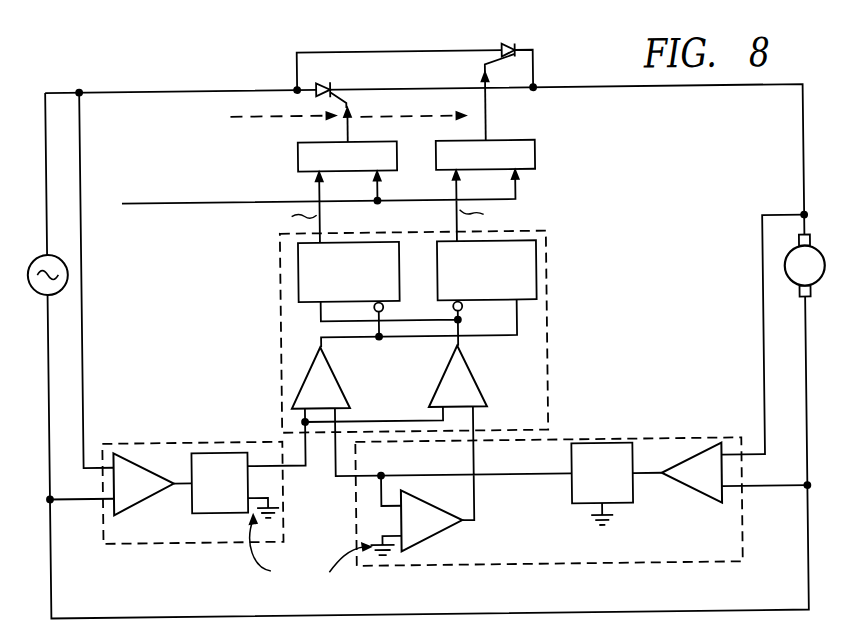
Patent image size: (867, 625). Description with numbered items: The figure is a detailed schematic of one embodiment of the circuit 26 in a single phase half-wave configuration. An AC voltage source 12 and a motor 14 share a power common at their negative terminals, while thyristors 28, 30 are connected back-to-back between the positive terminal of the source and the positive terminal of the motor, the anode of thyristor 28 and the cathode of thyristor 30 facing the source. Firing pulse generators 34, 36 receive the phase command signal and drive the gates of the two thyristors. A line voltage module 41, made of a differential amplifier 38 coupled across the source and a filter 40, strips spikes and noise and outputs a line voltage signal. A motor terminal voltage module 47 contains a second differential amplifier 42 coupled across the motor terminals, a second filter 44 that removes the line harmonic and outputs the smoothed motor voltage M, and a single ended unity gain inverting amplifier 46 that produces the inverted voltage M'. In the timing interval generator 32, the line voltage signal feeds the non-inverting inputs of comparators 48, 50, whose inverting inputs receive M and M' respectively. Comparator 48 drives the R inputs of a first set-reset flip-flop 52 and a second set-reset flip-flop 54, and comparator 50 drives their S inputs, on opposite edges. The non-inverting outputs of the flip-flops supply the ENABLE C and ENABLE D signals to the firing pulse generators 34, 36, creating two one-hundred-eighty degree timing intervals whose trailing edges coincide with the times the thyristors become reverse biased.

The circuit 26 is at (110, 70).
The AC voltage source 12 is at (69, 271).
The motor 14 is at (781, 270).
The thyristor 28 is at (336, 87).
The thyristor 30 is at (521, 48).
The firing pulse generator 34 is at (338, 166).
The firing pulse generator 36 is at (476, 166).
The timing interval generator 32 is at (505, 372).
The first set-reset flip-flop 52 is at (337, 282).
The second set-reset flip-flop 54 is at (475, 282).
The comparator 48 is at (308, 390).
The comparator 50 is at (445, 390).
The line voltage module 41 is at (146, 532).
The differential amplifier 38 is at (128, 490).
The filter 40 is at (206, 491).
The motor terminal voltage module 47 is at (698, 552).
The second differential amplifier 42 is at (686, 486).
The second filter 44 is at (588, 485).
The single ended unity gain inverting amplifier 46 is at (412, 530).